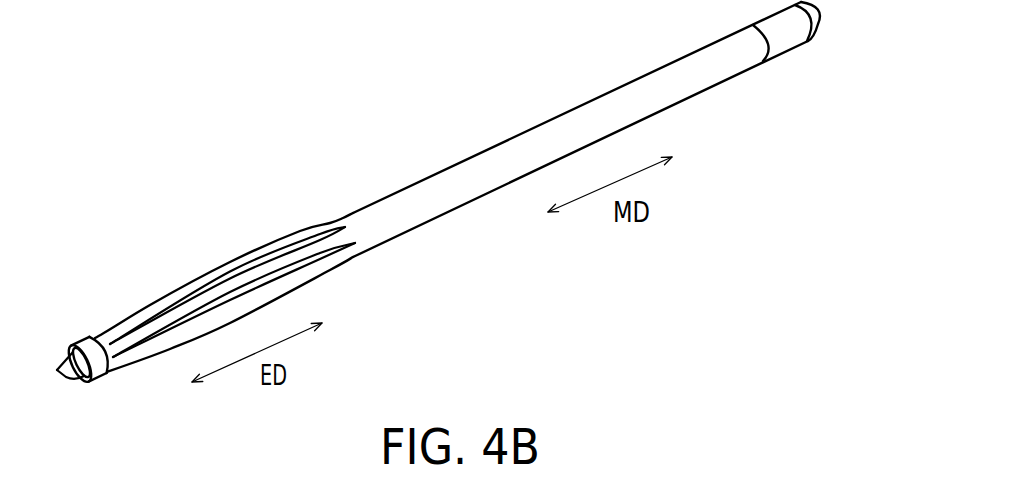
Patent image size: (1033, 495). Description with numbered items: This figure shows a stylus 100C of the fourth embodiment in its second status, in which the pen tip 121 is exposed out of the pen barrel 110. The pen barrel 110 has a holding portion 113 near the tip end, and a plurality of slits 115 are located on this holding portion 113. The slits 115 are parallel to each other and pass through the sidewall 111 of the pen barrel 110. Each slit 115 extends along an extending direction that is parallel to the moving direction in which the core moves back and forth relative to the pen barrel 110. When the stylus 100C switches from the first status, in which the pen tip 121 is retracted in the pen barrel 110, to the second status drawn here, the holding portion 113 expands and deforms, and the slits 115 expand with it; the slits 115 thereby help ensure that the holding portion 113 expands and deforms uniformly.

The stylus 100C is at (439, 193).
The pen barrel 110 is at (442, 193).
The sidewall 111 is at (510, 162).
The holding portion 113 is at (209, 286).
The slits 115 is at (271, 281).
The pen tip 121 is at (66, 368).